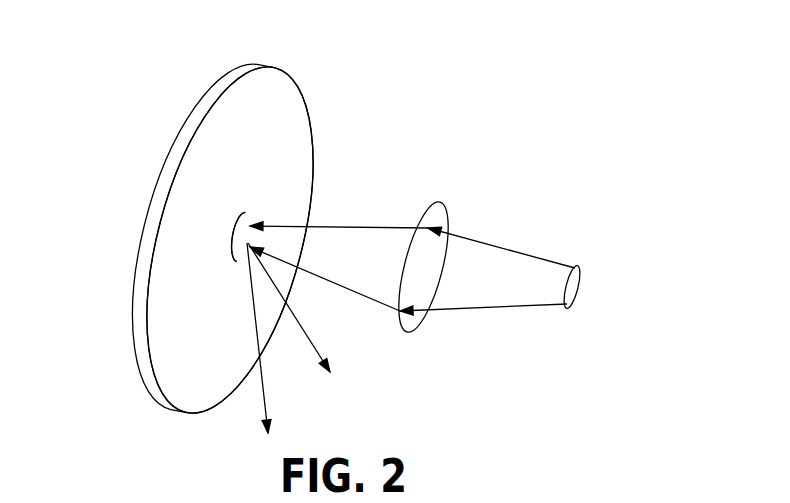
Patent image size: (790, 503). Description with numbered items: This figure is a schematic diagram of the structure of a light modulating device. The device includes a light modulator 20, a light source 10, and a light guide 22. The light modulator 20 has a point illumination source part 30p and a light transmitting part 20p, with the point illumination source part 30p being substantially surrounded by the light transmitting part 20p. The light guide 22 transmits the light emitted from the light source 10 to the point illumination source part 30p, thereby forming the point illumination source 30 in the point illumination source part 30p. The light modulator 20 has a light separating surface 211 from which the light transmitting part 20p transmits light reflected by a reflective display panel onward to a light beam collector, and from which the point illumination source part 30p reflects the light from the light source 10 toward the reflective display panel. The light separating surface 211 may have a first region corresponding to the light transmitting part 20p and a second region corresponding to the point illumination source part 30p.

The light source 10 is at (578, 292).
The light guide 22 is at (438, 213).
The light modulator 20 is at (167, 195).
The light separating surface 211 is at (233, 92).
The light transmitting part 20p is at (283, 107).
The point illumination source 30 is at (240, 242).
The point illumination source part 30p is at (243, 213).